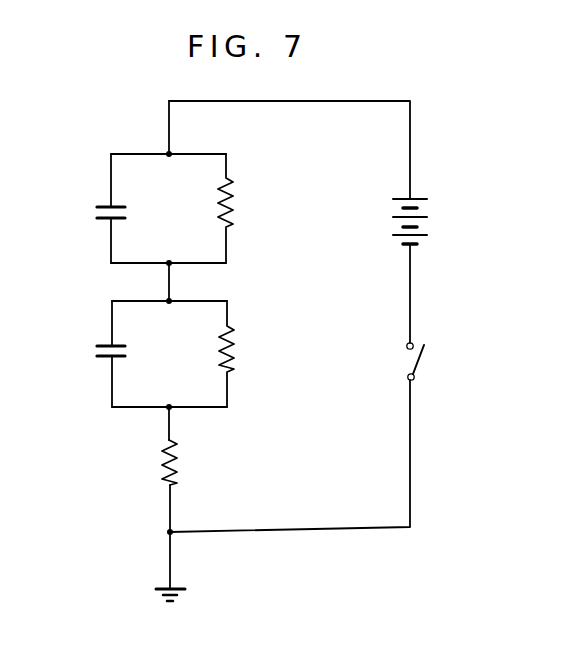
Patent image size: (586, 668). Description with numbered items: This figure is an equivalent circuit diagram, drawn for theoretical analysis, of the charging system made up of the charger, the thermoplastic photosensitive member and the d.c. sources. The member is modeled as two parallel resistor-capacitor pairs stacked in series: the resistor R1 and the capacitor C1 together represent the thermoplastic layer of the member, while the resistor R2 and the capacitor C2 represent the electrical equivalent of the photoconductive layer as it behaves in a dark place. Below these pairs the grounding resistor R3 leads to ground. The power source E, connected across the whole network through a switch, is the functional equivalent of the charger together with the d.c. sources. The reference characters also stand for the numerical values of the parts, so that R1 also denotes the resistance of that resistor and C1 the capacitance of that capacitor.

The capacitor C1 is at (108, 206).
The resistor R1 is at (236, 201).
The capacitor C2 is at (108, 343).
The resistor R2 is at (238, 357).
The grounding resistor R3 is at (178, 460).
The power source E is at (426, 226).